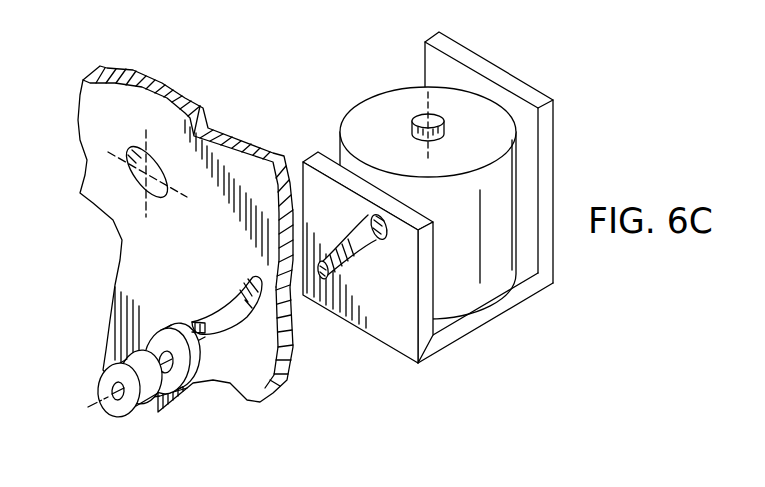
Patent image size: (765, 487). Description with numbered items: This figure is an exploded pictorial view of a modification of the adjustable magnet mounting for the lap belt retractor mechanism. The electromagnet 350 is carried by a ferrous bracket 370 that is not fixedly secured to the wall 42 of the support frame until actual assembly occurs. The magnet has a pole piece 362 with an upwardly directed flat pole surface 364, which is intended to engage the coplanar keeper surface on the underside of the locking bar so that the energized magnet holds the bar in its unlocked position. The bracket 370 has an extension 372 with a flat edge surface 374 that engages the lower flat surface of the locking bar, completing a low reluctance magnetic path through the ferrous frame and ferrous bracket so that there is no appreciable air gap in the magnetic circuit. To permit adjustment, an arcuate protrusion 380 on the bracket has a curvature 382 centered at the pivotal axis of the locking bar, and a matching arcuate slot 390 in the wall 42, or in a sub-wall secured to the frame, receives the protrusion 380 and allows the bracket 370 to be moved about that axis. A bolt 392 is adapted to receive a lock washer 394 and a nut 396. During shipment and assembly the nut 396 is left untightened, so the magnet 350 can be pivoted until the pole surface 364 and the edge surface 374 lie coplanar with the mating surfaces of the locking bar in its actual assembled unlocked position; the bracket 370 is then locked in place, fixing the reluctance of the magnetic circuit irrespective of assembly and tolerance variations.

The wall 42 is at (173, 100).
The electromagnet 350 is at (513, 193).
The pole piece 362 is at (423, 138).
The flat pole surface 364 is at (423, 118).
The bracket 370 is at (483, 330).
The extension 372 is at (555, 125).
The flat edge surface 374 is at (530, 92).
The arcuate protrusion 380 is at (376, 244).
The curvature 382 is at (180, 321).
The arcuate slot 390 is at (245, 316).
The bolt 392 is at (291, 332).
The lock washer 394 is at (175, 340).
The nut 396 is at (108, 373).